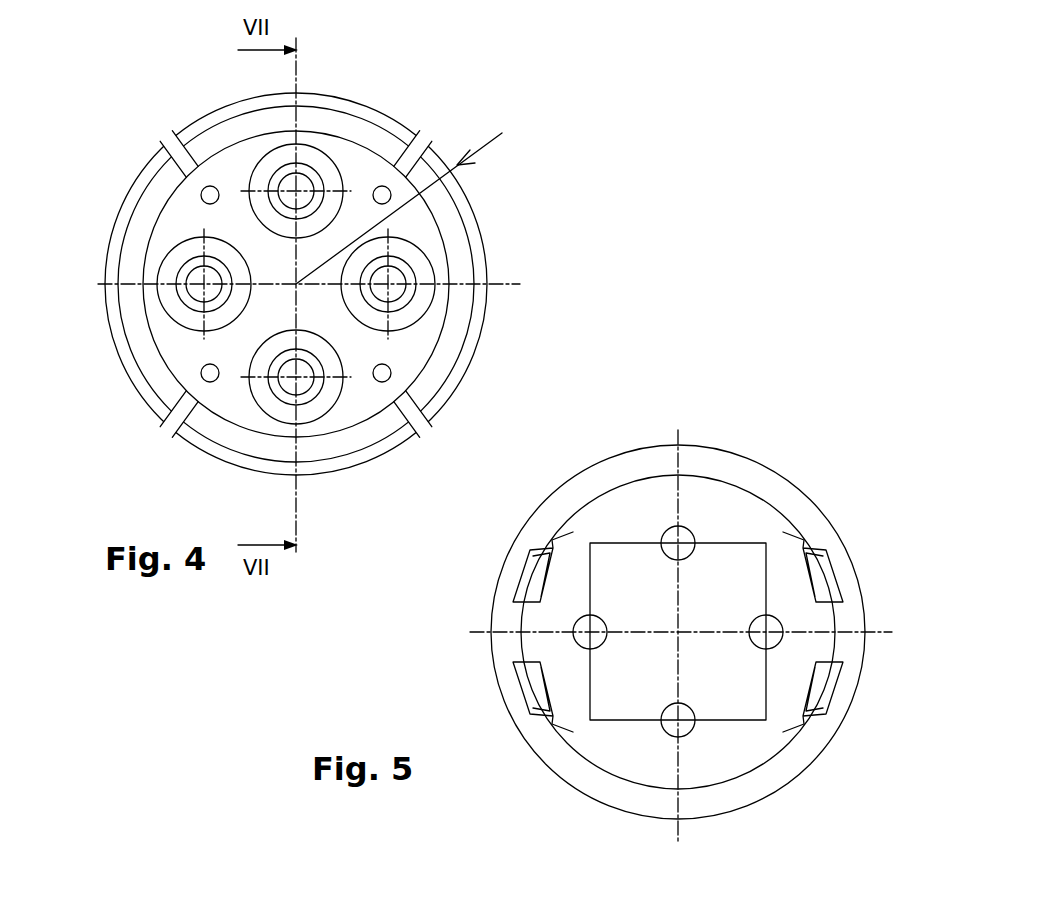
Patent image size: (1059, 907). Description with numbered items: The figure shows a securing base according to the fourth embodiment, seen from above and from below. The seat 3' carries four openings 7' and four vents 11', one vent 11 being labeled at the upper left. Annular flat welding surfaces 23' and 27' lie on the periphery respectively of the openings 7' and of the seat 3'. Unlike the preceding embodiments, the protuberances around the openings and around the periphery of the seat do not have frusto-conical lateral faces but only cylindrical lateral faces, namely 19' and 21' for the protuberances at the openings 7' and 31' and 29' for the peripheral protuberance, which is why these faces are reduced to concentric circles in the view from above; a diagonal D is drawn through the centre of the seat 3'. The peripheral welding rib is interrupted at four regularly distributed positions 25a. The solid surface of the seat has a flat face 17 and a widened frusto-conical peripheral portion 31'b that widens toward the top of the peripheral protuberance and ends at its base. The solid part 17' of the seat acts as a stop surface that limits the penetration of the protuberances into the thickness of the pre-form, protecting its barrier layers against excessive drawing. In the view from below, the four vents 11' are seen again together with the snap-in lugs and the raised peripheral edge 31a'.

In FIG. 4, the seat 3' is at (269, 295).
In FIG. 4, the openings 7' is at (295, 272).
In FIG. 4, the small hole 11 is at (152, 179).
In FIG. 4, the vents 11' is at (249, 300).
In FIG. 5, the vents 11' is at (671, 628).
In FIG. 4, the flat face 17 is at (387, 444).
In FIG. 4, the solid part of the seat 17' is at (116, 208).
In FIG. 4, the cylindrical lateral face 19' is at (216, 456).
In FIG. 4, the cylindrical lateral face 21' is at (355, 334).
In FIG. 4, the annular flat welding surface 23' is at (475, 341).
In FIG. 4, the interrupted rib positions 25a is at (423, 150).
In FIG. 4, the annular flat welding surface 27' is at (488, 303).
In FIG. 4, the cylindrical lateral face 29' is at (349, 284).
In FIG. 4, the cylindrical lateral face 31' is at (319, 284).
In FIG. 5, the cylindrical lateral face 31' is at (678, 651).
In FIG. 4, the peripheral portion 31'b is at (358, 284).
In FIG. 5, the raised peripheral edge 31a' is at (694, 616).
In FIG. 4, the diagonal direction D is at (402, 208).